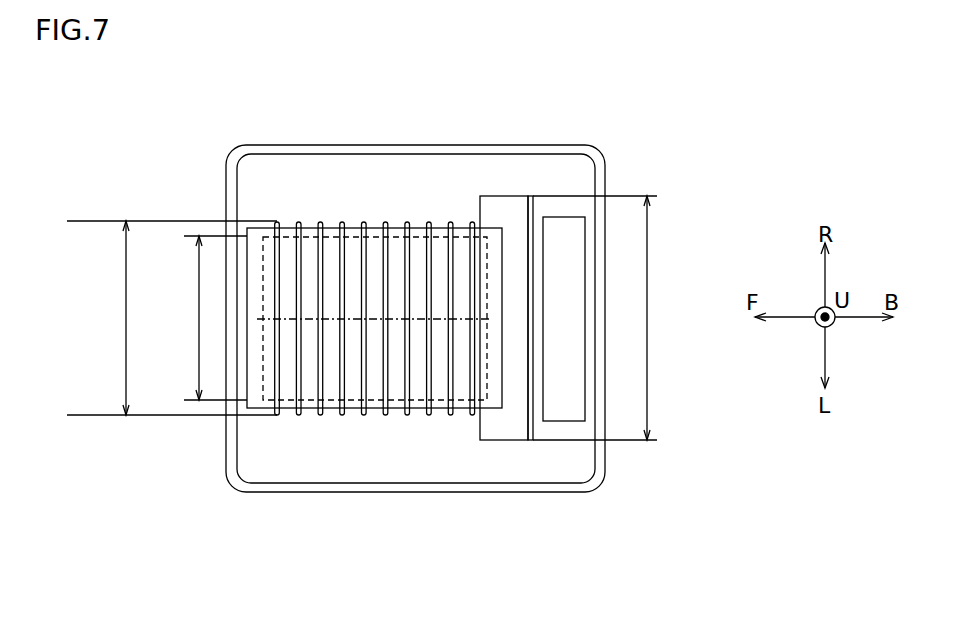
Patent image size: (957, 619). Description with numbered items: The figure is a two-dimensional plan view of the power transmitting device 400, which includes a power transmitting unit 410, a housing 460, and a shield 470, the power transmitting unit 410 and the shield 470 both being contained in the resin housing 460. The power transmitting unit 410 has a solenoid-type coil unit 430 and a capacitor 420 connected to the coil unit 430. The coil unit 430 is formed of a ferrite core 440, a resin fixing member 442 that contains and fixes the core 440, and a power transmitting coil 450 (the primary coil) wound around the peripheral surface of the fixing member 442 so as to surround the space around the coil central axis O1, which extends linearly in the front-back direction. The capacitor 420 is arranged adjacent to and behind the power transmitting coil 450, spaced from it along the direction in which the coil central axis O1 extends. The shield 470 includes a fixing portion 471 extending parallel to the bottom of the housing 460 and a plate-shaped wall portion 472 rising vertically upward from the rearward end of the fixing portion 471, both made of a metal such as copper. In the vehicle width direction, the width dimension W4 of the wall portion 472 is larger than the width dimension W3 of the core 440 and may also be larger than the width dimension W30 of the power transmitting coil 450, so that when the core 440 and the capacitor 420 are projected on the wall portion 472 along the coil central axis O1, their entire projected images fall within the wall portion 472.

The power transmitting device 400 is at (225, 115).
The power transmitting unit 410 is at (528, 76).
The capacitor 420 is at (560, 250).
The coil unit 430 is at (405, 107).
The core 440 is at (332, 230).
The fixing member 442 is at (262, 227).
The power transmitting coil 450 is at (385, 225).
The housing 460 is at (232, 443).
The shield 470 is at (557, 536).
The fixing portion 471 is at (503, 423).
The wall portion 472 is at (530, 423).
The coil central axis O1 is at (357, 320).
The width dimension of power transmitting coil W30 is at (125, 320).
The width dimension of core W3 is at (197, 320).
The width dimension of wall portion W4 is at (657, 322).